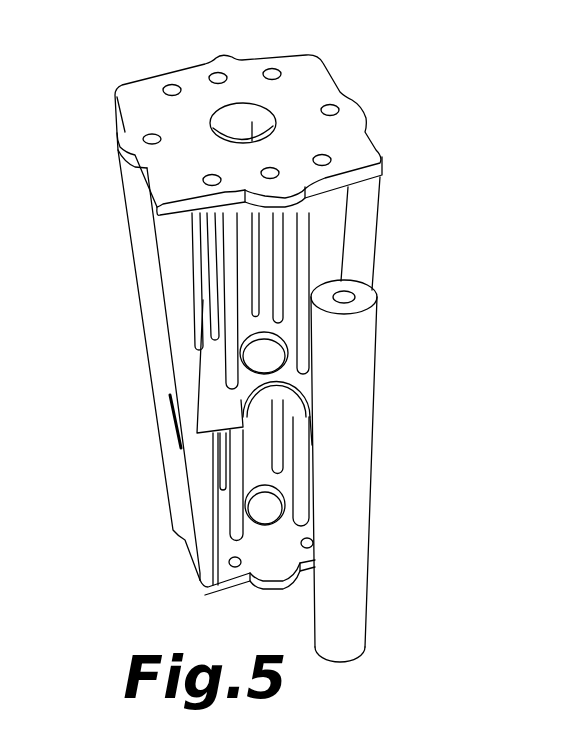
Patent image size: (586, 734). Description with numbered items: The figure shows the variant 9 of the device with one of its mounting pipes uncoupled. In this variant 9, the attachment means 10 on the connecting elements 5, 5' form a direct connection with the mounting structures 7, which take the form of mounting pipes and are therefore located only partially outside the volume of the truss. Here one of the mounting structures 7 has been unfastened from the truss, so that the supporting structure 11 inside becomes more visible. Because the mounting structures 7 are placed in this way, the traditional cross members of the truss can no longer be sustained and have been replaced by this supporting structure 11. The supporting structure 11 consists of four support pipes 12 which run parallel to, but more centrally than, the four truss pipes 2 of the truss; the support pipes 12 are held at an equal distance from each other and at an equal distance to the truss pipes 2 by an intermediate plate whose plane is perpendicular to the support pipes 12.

The variant of the device 9 is at (242, 338).
The connecting element 5 is at (268, 135).
The connecting element 5' is at (257, 579).
The attachment means 10 is at (218, 78).
The mounting structure 7 is at (140, 278).
The truss pipe 2 is at (360, 257).
The supporting structure 11 is at (230, 350).
The support pipe 12 is at (422, 729).